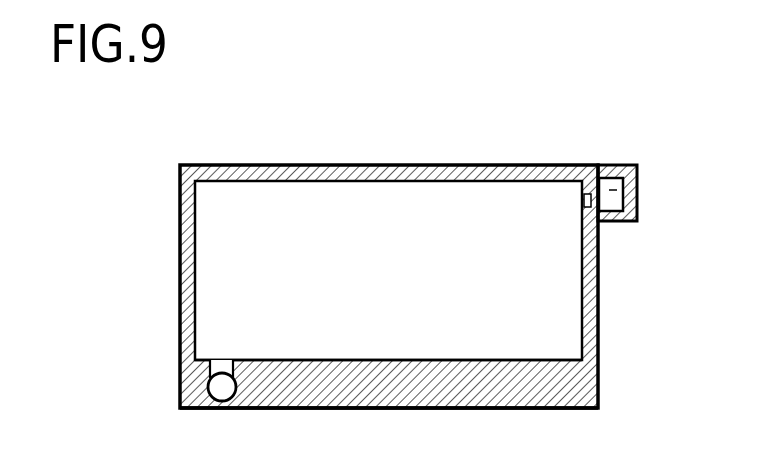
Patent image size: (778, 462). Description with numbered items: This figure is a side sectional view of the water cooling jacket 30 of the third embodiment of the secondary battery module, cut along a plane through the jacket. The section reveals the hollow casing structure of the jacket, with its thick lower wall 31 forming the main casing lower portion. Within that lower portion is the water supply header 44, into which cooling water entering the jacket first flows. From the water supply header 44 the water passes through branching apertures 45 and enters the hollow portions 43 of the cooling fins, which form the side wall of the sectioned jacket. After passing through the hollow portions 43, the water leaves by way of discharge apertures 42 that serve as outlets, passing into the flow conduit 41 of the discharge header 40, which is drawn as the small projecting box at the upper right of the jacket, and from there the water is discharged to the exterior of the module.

The water cooling jacket 30 is at (181, 172).
The bottom wall 31 is at (585, 386).
The discharge header 40 is at (638, 172).
The flow conduit 41 is at (637, 198).
The discharge apertures 42 is at (584, 200).
The hollow portions 43 is at (558, 306).
The water supply header 44 is at (220, 387).
The branching apertures 45 is at (217, 364).